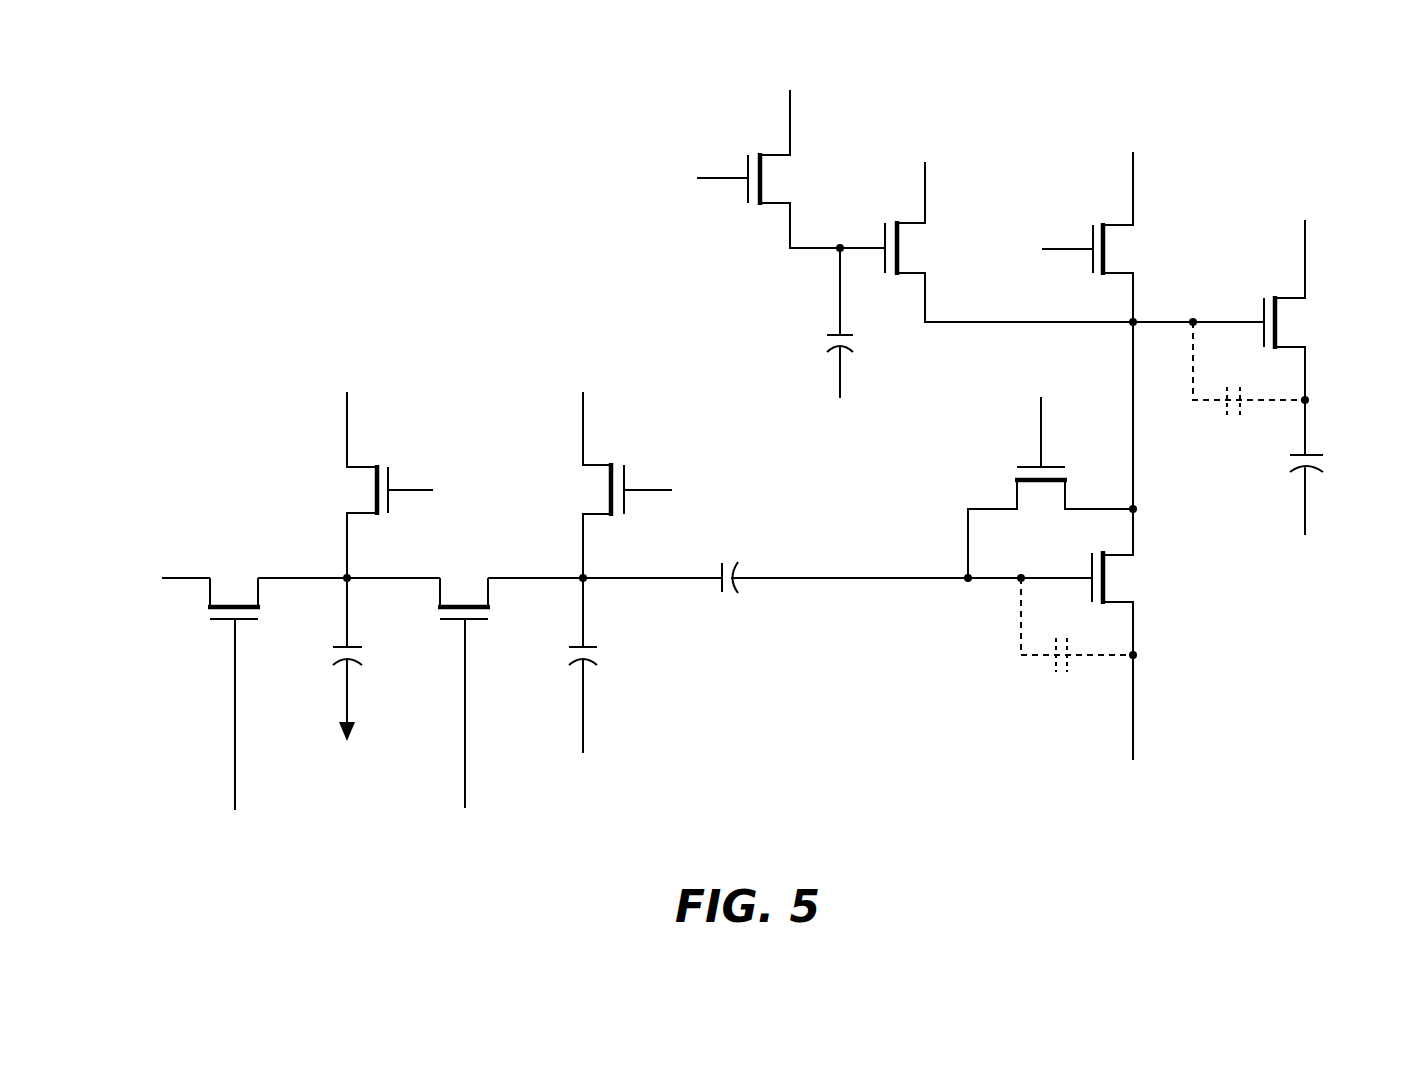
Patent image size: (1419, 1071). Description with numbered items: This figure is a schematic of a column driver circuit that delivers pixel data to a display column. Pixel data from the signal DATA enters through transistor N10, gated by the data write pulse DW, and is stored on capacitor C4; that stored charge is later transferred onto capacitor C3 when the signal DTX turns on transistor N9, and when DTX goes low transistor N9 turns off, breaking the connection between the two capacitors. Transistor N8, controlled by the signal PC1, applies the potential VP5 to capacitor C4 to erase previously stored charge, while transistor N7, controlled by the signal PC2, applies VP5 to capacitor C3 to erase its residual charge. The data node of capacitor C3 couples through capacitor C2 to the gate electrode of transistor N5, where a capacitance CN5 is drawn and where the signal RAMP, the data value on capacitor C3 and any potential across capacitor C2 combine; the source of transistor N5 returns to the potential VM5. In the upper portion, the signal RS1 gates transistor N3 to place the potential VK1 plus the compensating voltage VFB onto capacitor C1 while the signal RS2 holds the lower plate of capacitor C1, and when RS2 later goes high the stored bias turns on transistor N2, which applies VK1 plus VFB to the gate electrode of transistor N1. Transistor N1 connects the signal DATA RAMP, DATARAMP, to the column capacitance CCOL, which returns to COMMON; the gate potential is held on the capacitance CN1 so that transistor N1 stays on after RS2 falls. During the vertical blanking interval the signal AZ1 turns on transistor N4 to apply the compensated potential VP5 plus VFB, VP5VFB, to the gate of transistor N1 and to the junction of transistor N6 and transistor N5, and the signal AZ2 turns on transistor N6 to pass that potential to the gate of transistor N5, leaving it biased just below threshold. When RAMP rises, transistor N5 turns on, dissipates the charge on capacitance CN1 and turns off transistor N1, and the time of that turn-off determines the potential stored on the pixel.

The transistor N1 is at (1292, 337).
The transistor N2 is at (1009, 242).
The transistor N3 is at (791, 169).
The transistor N4 is at (1098, 353).
The transistor N5 is at (1124, 634).
The transistor N6 is at (1050, 487).
The transistor N7 is at (614, 485).
The transistor N8 is at (378, 485).
The transistor N9 is at (464, 678).
The transistor N10 is at (234, 679).
The capacitor C1 is at (862, 323).
The capacitor C2 is at (733, 563).
The capacitor C3 is at (603, 665).
The capacitor C4 is at (366, 659).
The capacitance CN1 is at (1249, 383).
The parasitic capacitance CN5 is at (1077, 639).
The column capacitance CCOL is at (1339, 494).
The data signal DATA is at (156, 578).
The data write pulse DW is at (234, 827).
The signal DTX is at (467, 827).
The signal RAMP is at (587, 782).
The potential VP5 is at (465, 375).
The signal PC1 is at (468, 490).
The signal PC2 is at (702, 490).
The signal RS1 is at (652, 178).
The signal RS2 is at (839, 423).
The potential VK1 is at (857, 109).
The signal AZ1 is at (1013, 249).
The signal AZ2 is at (1040, 375).
The potential VP5 plus VFB VP5VFB is at (1133, 125).
The voltage VM5 + VFB VM5 is at (1133, 783).
The signal DATA RAMP DATARAMP is at (1305, 202).
The common node COMMON is at (1310, 560).